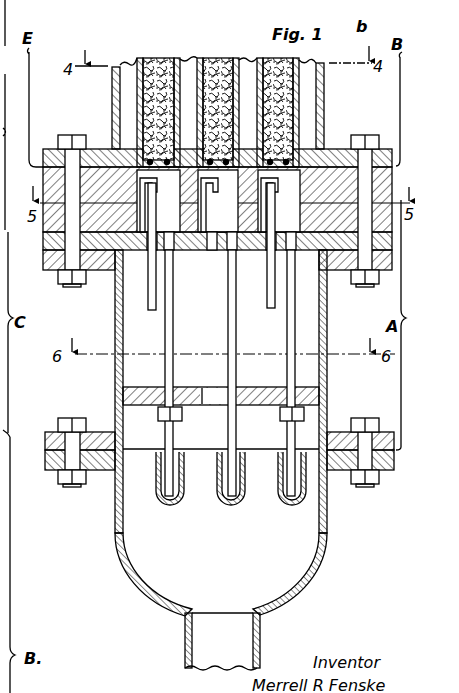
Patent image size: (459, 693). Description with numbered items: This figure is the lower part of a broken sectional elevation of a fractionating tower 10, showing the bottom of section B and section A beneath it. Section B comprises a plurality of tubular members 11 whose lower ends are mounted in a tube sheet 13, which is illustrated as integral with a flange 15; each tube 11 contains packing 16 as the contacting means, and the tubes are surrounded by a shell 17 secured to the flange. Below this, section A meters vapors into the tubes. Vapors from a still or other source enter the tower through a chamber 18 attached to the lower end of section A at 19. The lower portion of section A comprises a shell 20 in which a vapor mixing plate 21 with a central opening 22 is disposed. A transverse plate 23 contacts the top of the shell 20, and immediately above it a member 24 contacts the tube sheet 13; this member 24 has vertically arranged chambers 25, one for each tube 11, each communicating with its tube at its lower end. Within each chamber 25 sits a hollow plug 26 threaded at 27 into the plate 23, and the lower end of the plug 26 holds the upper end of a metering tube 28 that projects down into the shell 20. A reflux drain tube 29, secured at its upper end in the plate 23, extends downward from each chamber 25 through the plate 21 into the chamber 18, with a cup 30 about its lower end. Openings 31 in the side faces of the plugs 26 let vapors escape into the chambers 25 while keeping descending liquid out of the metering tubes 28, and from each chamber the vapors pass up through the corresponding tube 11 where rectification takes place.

The tower 10 is at (88, 307).
The tubular members 11 is at (190, 60).
The tube sheet 13 is at (127, 147).
The flange 15 is at (46, 148).
The packing 16 is at (165, 59).
The shell 17 is at (114, 67).
The chamber 18 is at (149, 567).
The attachment of chamber to section A 19 is at (394, 470).
The shell 20 is at (117, 320).
The vapor mixing plate 21 is at (318, 389).
The opening 22 is at (207, 394).
The transverse plate 23 is at (346, 272).
The member 24 is at (333, 187).
The chambers 25 is at (289, 182).
The hollow plug 26 is at (100, 148).
The threaded connection 27 is at (116, 271).
The metering tube 28 is at (148, 294).
The reflux drain tube 29 is at (173, 337).
The cup 30 is at (217, 502).
The openings 31 is at (176, 235).